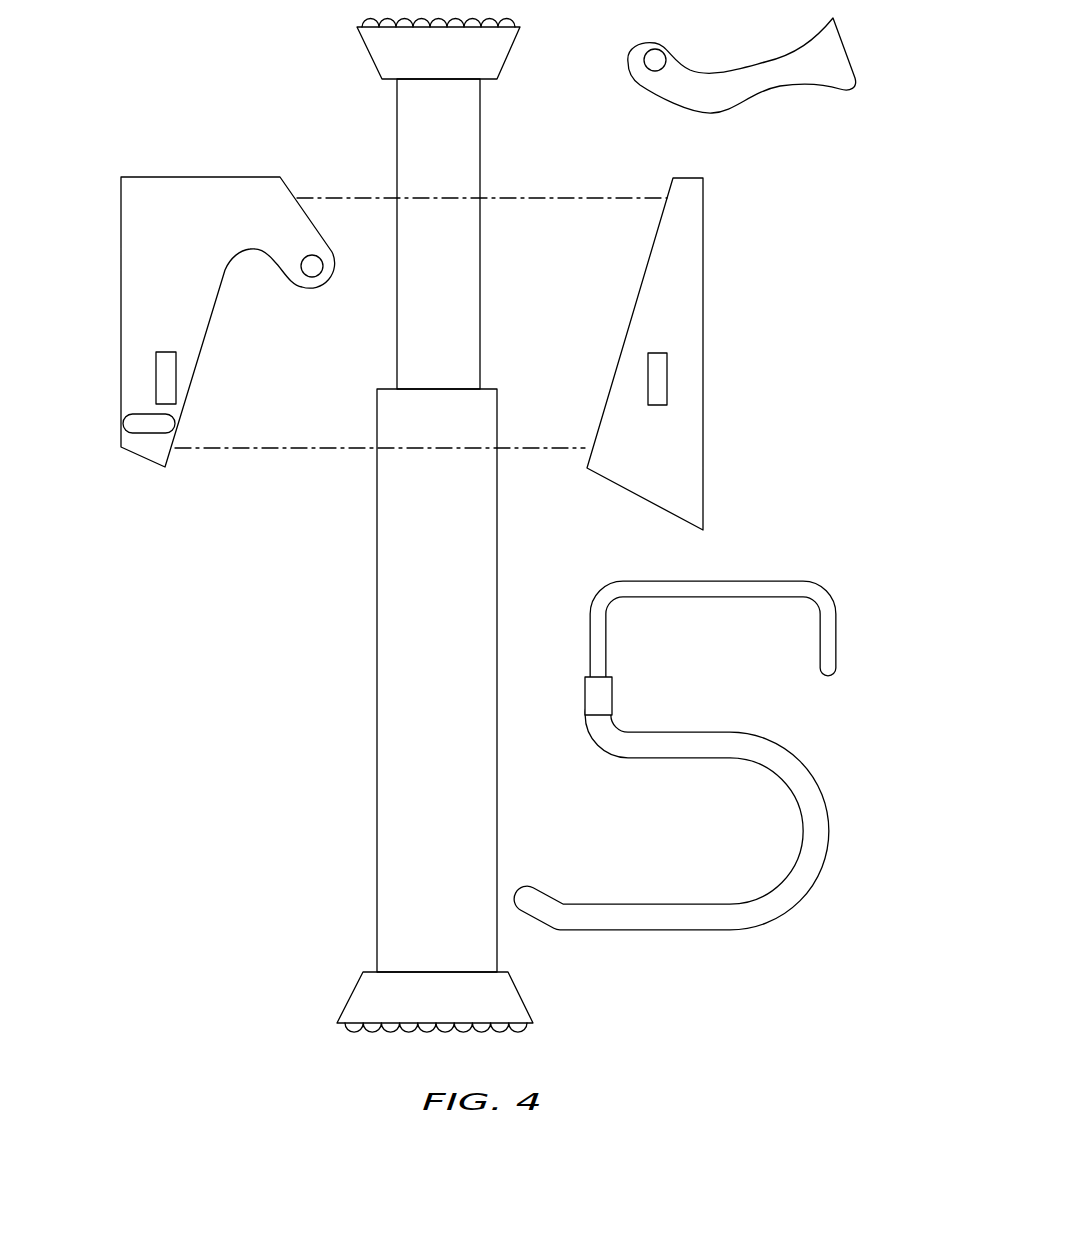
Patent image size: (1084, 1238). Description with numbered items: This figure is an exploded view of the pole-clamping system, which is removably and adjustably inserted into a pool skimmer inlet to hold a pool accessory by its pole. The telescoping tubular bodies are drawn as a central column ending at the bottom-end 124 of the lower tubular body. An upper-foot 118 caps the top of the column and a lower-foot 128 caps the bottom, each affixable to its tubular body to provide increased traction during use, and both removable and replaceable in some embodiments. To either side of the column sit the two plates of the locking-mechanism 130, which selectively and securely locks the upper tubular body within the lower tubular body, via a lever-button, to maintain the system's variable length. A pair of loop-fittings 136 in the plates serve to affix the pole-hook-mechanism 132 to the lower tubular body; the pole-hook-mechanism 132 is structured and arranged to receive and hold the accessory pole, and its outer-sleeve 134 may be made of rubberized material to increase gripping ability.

The upper-foot 118 is at (376, 57).
The bottom-end 124 is at (377, 930).
The lower-foot 128 is at (357, 987).
The locking-mechanism 130 is at (191, 185).
The pole-hook-mechanism 132 is at (747, 583).
The outer-sleeve 134 is at (770, 748).
The loop-fittings 136 is at (168, 375).